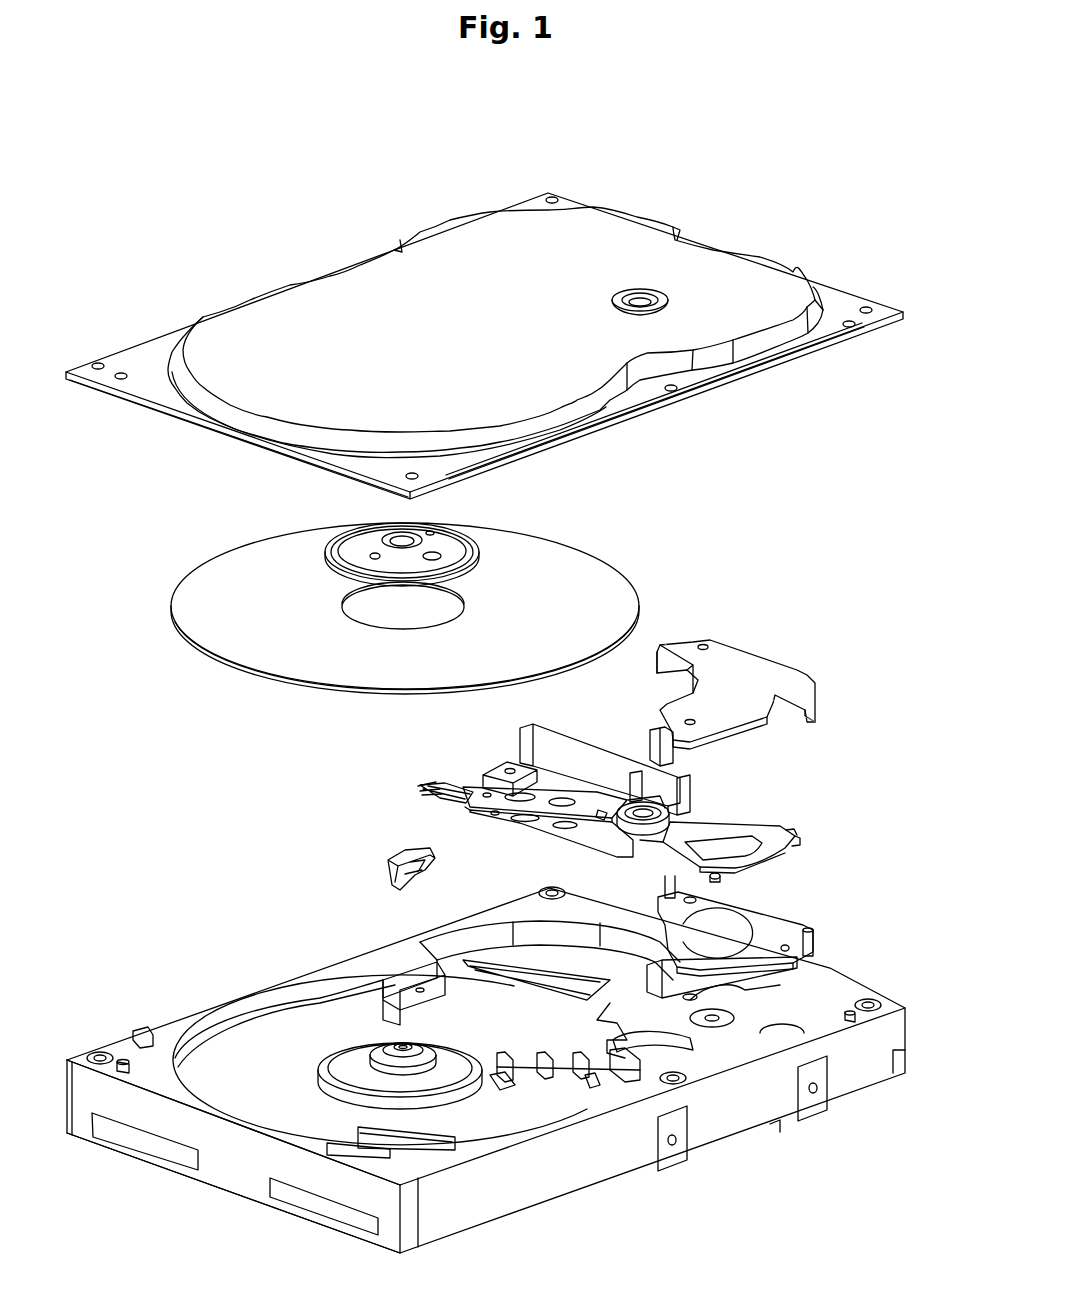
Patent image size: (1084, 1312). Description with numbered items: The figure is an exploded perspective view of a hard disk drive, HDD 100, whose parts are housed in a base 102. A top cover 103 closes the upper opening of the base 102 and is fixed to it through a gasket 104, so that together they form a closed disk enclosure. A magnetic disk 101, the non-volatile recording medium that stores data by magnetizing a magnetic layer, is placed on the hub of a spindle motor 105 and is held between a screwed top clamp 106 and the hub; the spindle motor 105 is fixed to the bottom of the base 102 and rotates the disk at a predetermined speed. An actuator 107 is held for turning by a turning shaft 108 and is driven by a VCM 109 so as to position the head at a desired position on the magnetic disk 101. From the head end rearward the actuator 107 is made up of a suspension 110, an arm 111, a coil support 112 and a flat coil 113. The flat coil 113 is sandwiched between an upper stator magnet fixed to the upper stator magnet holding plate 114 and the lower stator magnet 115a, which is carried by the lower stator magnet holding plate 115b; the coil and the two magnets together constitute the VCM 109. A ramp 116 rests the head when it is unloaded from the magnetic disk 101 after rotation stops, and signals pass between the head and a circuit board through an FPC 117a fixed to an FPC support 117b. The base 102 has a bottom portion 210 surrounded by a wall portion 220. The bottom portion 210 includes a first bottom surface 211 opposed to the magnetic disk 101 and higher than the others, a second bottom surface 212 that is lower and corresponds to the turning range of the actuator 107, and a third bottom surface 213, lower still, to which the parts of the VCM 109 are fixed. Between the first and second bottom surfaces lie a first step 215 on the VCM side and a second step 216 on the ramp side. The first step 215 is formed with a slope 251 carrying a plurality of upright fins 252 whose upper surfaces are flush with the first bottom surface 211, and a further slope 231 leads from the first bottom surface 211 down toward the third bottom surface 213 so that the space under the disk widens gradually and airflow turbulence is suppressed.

The HDD 100 is at (857, 1223).
The magnetic disk 101 is at (625, 585).
The base 102 is at (907, 1007).
The top cover 103 is at (838, 296).
The gasket 104 is at (640, 416).
The spindle motor 105 is at (360, 1058).
The top clamp 106 is at (443, 537).
The actuator 107 is at (792, 817).
The turning shaft 108 is at (668, 792).
The VCM 109 is at (864, 837).
The suspension 110 is at (452, 786).
The arm 111 is at (528, 828).
The coil support 112 is at (716, 881).
The flat coil 113 is at (753, 860).
The upper stator magnet holding plate 114 is at (736, 652).
The lower stator magnet 115a is at (745, 933).
The lower stator magnet holding plate 115b is at (817, 943).
The ramp 116 is at (394, 858).
The FPC 117a is at (685, 803).
The FPC support 117b is at (565, 750).
The bottom portion 210 is at (243, 1041).
The first bottom surface 211 is at (267, 1107).
The second bottom surface 212 is at (433, 1008).
The third bottom surface 213 is at (730, 1037).
The first step 215 is at (542, 1050).
The second step 216 is at (390, 1020).
The wall portion 220 is at (190, 1037).
The slope 231 is at (590, 1110).
The slope 251 is at (570, 1073).
The fin 252 is at (493, 1080).